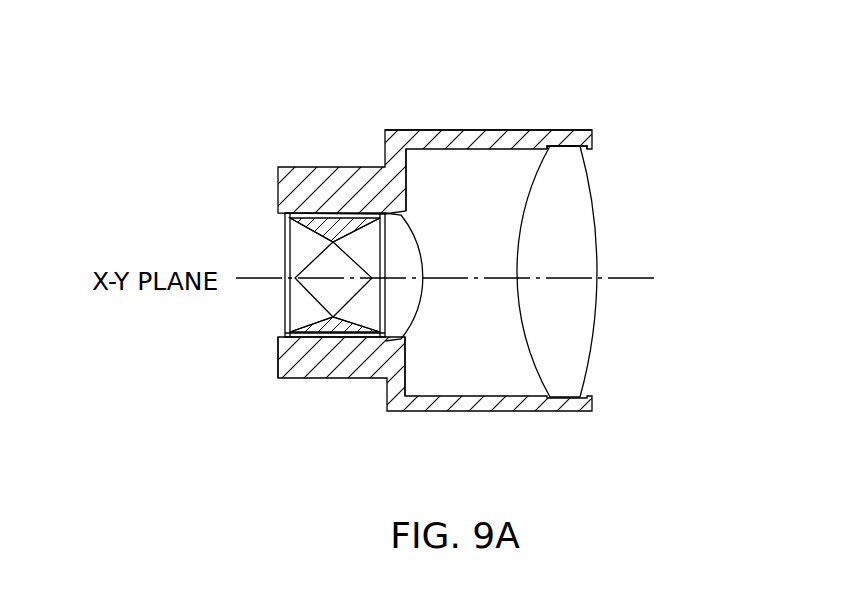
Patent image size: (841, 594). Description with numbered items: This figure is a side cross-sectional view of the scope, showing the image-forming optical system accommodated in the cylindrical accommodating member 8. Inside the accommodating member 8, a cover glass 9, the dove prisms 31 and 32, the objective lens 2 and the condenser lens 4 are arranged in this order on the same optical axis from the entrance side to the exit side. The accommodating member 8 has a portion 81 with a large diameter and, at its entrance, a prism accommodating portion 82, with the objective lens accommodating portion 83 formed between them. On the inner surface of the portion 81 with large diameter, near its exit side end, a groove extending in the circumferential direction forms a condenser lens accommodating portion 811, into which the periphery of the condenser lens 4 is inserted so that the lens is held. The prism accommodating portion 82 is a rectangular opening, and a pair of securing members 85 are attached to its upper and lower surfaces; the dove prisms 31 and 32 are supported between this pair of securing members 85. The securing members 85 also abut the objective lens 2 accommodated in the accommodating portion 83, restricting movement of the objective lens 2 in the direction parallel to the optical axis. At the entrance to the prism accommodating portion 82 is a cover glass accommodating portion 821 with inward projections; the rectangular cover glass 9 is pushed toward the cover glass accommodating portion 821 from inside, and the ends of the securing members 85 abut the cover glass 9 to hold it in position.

The objective lens 2 is at (424, 330).
The condenser lens 4 is at (598, 330).
The accommodating member 8 is at (528, 153).
The portion with a large diameter 81 is at (490, 149).
The condenser lens accommodating portion 811 is at (588, 152).
The prism accommodating portion 82 is at (325, 167).
The cover glass accommodating portion 821 is at (276, 338).
The objective lens accommodating portion 83 is at (413, 222).
The securing members 85 is at (336, 235).
The cover glass 9 is at (298, 249).
The dove prism 31 is at (363, 213).
The dove prism 32 is at (366, 338).